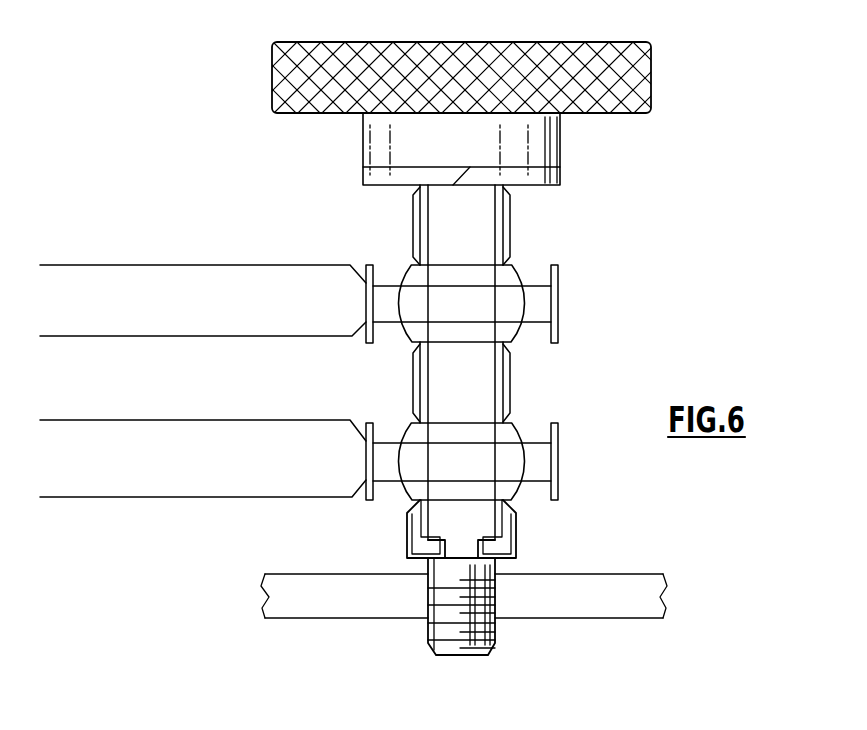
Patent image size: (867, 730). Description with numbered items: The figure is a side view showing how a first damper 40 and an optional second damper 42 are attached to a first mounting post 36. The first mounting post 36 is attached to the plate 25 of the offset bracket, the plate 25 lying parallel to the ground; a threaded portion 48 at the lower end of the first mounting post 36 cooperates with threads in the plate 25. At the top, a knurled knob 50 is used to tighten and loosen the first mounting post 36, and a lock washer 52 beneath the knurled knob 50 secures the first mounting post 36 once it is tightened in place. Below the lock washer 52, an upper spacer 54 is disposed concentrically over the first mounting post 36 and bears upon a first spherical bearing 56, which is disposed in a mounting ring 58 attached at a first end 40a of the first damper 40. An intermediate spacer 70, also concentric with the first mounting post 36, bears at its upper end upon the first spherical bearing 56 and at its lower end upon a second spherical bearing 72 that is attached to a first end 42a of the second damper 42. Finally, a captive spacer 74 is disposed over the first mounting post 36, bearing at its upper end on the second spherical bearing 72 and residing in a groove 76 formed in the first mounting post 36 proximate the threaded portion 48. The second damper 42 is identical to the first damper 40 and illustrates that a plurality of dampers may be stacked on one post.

The plate 25 is at (567, 605).
The first mounting post 36 is at (477, 658).
The first damper 40 is at (133, 290).
The first end of the first damper 40a is at (363, 302).
The second damper 42 is at (233, 498).
The first end of the second damper 42a is at (363, 458).
The threaded portion 48 is at (448, 630).
The knurled knob 50 is at (552, 42).
The lock washer 52 is at (544, 182).
The upper spacer 54 is at (515, 225).
The first spherical bearing 56 is at (510, 328).
The mounting ring 58 is at (558, 330).
The intermediate spacer 70 is at (510, 388).
The second spherical bearing 72 is at (512, 493).
The captive spacer 74 is at (517, 523).
The groove 76 is at (497, 566).